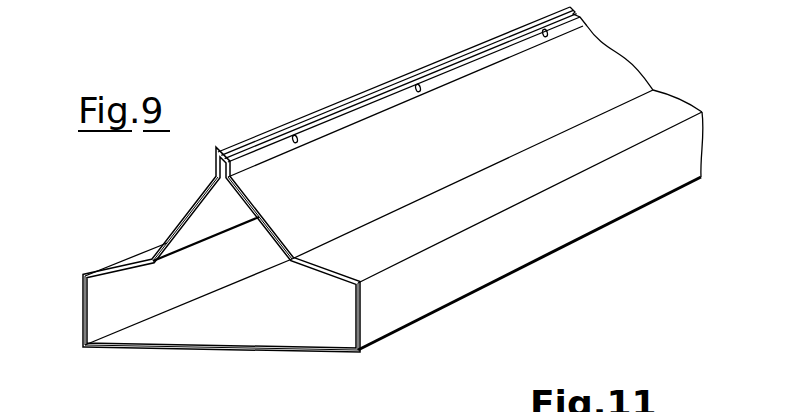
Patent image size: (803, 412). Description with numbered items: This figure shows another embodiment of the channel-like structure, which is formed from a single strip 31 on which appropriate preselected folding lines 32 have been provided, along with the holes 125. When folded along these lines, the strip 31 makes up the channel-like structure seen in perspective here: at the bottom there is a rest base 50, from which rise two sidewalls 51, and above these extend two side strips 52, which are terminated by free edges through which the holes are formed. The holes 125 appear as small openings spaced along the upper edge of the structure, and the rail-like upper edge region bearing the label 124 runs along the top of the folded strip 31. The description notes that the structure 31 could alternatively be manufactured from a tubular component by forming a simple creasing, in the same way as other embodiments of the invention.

The strip 31 is at (210, 354).
The folding lines 32 is at (245, 10).
The rest base 50 is at (268, 350).
The sidewalls 51 is at (100, 310).
The side strips 52 is at (607, 67).
The rail strip 124 is at (487, 60).
The holes 125 is at (417, 84).